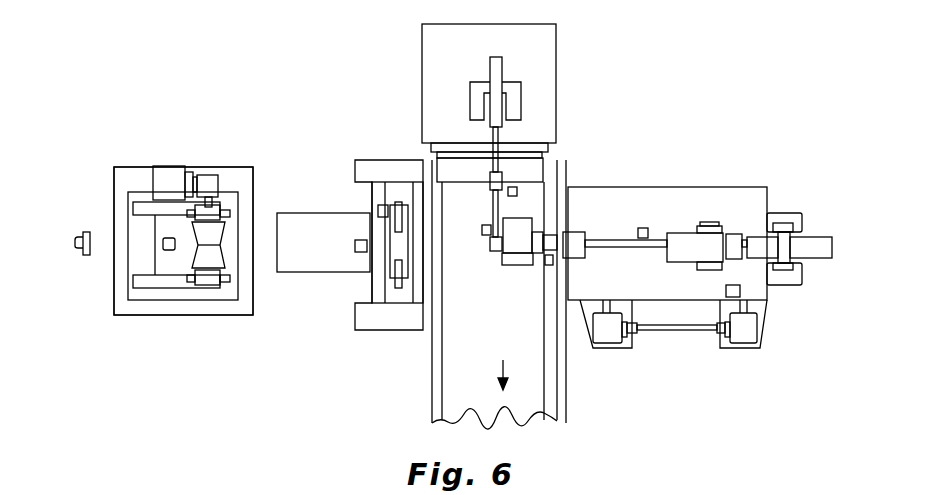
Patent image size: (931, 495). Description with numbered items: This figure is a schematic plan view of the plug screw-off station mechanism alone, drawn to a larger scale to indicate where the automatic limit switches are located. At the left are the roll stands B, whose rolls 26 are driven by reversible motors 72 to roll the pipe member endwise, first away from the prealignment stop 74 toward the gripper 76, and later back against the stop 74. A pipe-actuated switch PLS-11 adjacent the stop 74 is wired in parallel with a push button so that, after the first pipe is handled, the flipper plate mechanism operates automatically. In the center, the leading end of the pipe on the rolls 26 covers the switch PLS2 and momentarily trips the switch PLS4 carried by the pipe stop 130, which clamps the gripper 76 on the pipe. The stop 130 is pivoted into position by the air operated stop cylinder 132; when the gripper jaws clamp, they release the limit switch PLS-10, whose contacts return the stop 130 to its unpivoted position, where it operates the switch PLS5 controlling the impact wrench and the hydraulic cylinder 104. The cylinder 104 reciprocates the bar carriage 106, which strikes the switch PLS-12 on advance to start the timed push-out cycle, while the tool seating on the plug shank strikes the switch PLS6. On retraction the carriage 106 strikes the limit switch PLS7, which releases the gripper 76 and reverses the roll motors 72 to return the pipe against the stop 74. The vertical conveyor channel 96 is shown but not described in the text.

The reversible motor 72 is at (160, 167).
The roll stand B is at (228, 201).
The roll 26 is at (217, 257).
The pipe-actuated switch PLS-11 is at (168, 250).
The prealignment stop 74 is at (91, 233).
The switch PLS2 is at (355, 246).
The limit switch PLS-10 is at (378, 208).
The gripper 76 is at (404, 229).
The vertical conveyor chute 96 is at (552, 378).
The air operated stop cylinder 132 is at (497, 72).
The pipe stop 130 is at (494, 203).
The switch PLS5 is at (532, 202).
The switch PLS4 is at (486, 235).
The switch PLS6 is at (549, 265).
The bar carriage 106 is at (702, 209).
The hydraulic cylinder 104 is at (820, 236).
The switch PLS-12 is at (645, 228).
The limit switch PLS7 is at (726, 290).